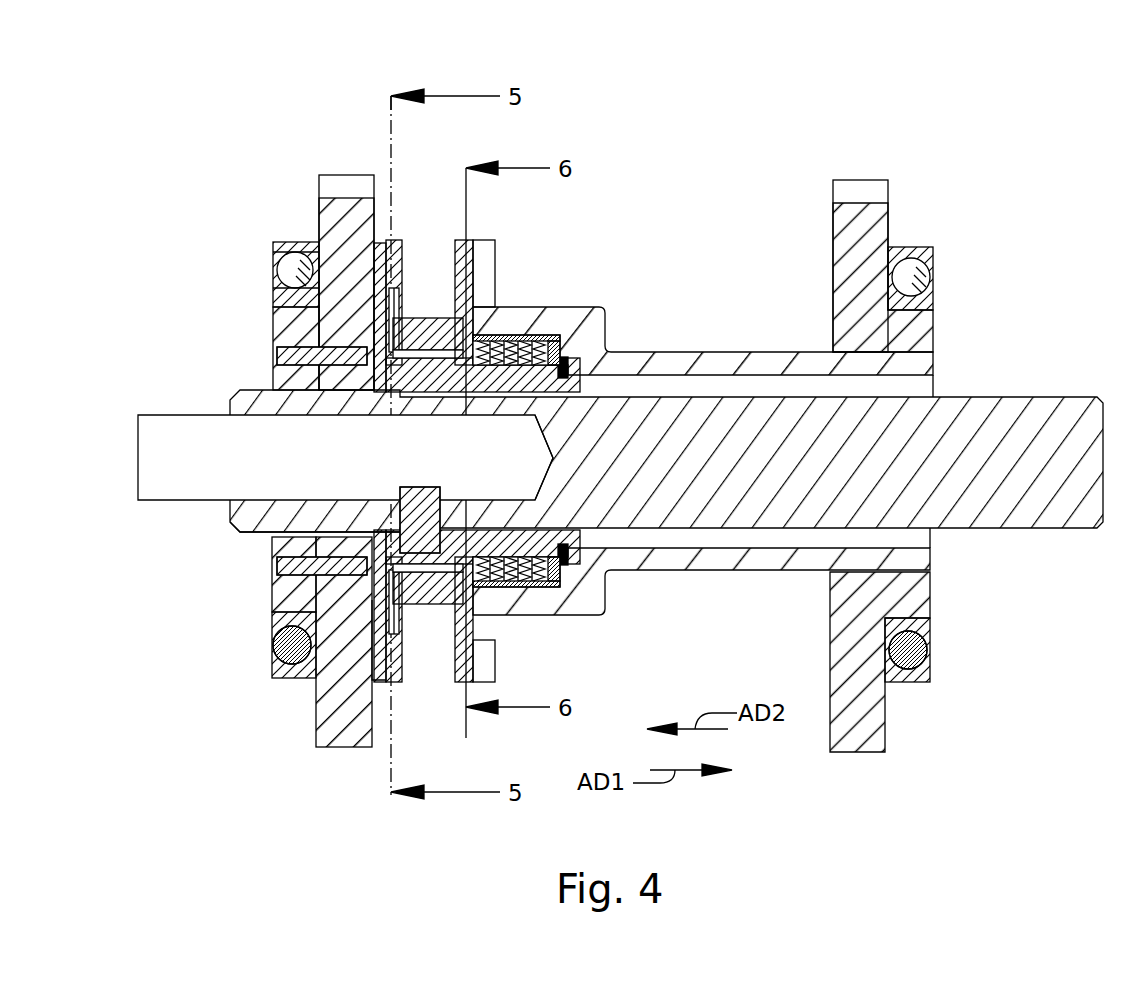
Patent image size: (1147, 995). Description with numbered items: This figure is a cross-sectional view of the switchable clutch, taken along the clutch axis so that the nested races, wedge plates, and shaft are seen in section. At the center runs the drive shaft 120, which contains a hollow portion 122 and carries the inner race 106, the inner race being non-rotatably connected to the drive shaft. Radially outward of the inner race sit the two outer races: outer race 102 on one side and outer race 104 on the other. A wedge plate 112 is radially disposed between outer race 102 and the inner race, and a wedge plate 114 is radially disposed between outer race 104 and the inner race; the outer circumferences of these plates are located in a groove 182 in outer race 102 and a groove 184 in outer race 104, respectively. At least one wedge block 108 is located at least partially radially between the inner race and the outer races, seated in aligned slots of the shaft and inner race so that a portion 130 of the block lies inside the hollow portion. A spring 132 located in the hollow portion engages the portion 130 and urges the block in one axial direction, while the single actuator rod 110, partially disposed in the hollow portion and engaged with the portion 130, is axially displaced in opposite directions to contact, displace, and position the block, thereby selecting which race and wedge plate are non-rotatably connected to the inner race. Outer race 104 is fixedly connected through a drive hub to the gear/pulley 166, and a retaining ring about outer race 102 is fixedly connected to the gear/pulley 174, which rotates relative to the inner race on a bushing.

The outer race 102 is at (390, 240).
The outer race 104 is at (470, 255).
The inner race 106 is at (300, 352).
The wedge block 108 is at (428, 300).
The actuator rod 110 is at (180, 414).
The wedge plate 112 is at (389, 295).
The wedge plate 114 is at (517, 347).
The drive shaft 120 is at (1052, 394).
The hollow portion 122 is at (520, 487).
The portion of the block 130 is at (398, 497).
The spring 132 is at (568, 308).
The gear/pulley 166 is at (860, 178).
The gear/pulley 174 is at (328, 174).
The groove 182 is at (388, 637).
The groove 184 is at (478, 303).